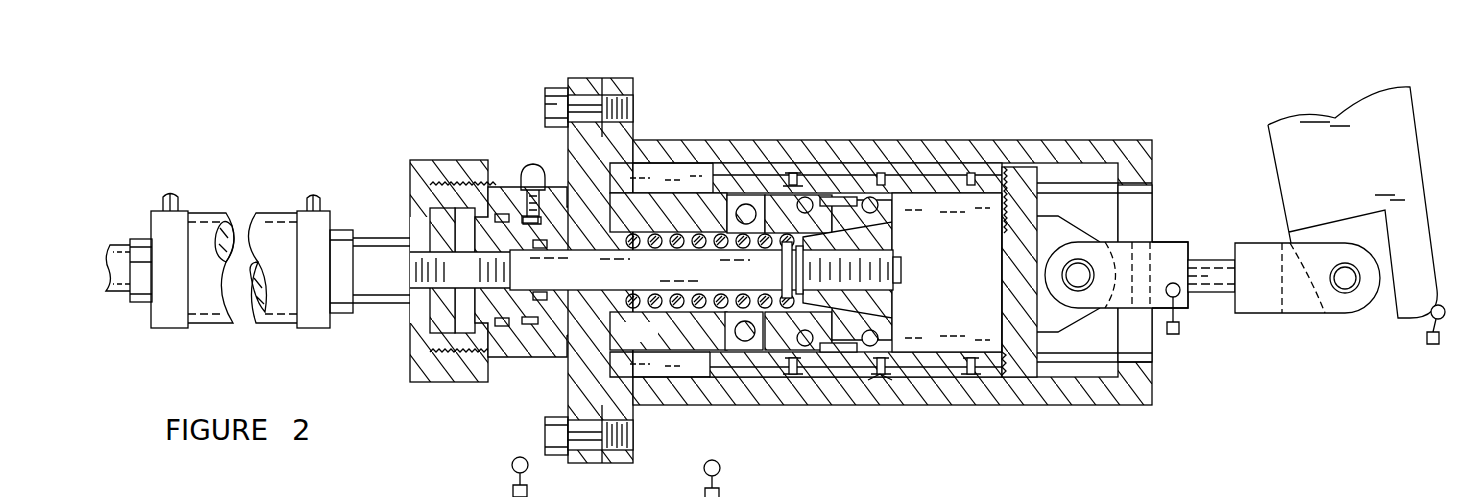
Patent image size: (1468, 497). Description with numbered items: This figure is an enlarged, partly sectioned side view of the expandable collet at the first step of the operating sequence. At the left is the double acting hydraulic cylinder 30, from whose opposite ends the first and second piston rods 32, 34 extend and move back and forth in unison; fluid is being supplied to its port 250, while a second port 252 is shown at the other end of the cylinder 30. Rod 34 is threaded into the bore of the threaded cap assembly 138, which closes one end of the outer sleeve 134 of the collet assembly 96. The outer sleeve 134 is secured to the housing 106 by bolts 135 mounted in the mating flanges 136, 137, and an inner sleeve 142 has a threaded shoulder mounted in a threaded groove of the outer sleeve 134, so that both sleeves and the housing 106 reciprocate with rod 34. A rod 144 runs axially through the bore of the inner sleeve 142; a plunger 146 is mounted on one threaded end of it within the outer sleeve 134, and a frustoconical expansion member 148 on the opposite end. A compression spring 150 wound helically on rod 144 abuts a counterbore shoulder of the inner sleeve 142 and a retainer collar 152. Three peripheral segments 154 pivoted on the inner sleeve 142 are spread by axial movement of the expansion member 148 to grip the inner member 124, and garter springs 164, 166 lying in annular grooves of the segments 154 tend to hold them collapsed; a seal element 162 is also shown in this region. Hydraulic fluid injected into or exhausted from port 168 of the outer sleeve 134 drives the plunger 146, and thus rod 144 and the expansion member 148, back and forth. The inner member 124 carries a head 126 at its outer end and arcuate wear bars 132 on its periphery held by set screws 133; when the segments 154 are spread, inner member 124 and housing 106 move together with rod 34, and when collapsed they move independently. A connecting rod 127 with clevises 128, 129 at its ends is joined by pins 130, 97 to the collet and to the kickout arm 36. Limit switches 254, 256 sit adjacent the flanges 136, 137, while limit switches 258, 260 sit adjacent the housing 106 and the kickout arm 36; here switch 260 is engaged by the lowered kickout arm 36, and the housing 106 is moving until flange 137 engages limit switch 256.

The double acting hydraulic cylinder 30 is at (268, 213).
The first piston rod 32 is at (106, 293).
The second piston rod 34 is at (386, 305).
The kickout arm 36 is at (1330, 106).
The collet assembly 96 is at (956, 91).
The pin 97 is at (1344, 293).
The housing 106 is at (1152, 143).
The inner member 124 is at (1040, 170).
The head 126 is at (1043, 357).
The connecting rod 127 is at (1200, 296).
The clevis 128 is at (1160, 242).
The clevis 129 is at (1260, 243).
The pin 130 is at (1073, 258).
The arcuate wear bars 132 is at (1010, 402).
The set screws 133 is at (882, 378).
The outer sleeve 134 is at (548, 360).
The bolts 135 is at (545, 101).
The flange 136 is at (577, 78).
The flange 137 is at (615, 79).
The threaded cap assembly 138 is at (412, 160).
The inner sleeve 142 is at (672, 192).
The rod 144 is at (627, 281).
The plunger 146 is at (433, 230).
The expansion member 148 is at (895, 247).
The compression spring 150 is at (672, 315).
The retainer collar 152 is at (850, 300).
The peripheral segments 154 is at (892, 208).
The sleeve 162 is at (842, 196).
The garter spring 164 is at (808, 197).
The garter spring 166 is at (880, 198).
The port 168 is at (535, 166).
The port 250 is at (166, 197).
The block 252 is at (309, 193).
The limit switch 254 is at (512, 490).
The limit switch 256 is at (719, 494).
The limit switch 258 is at (1178, 336).
The limit switch 260 is at (1433, 344).